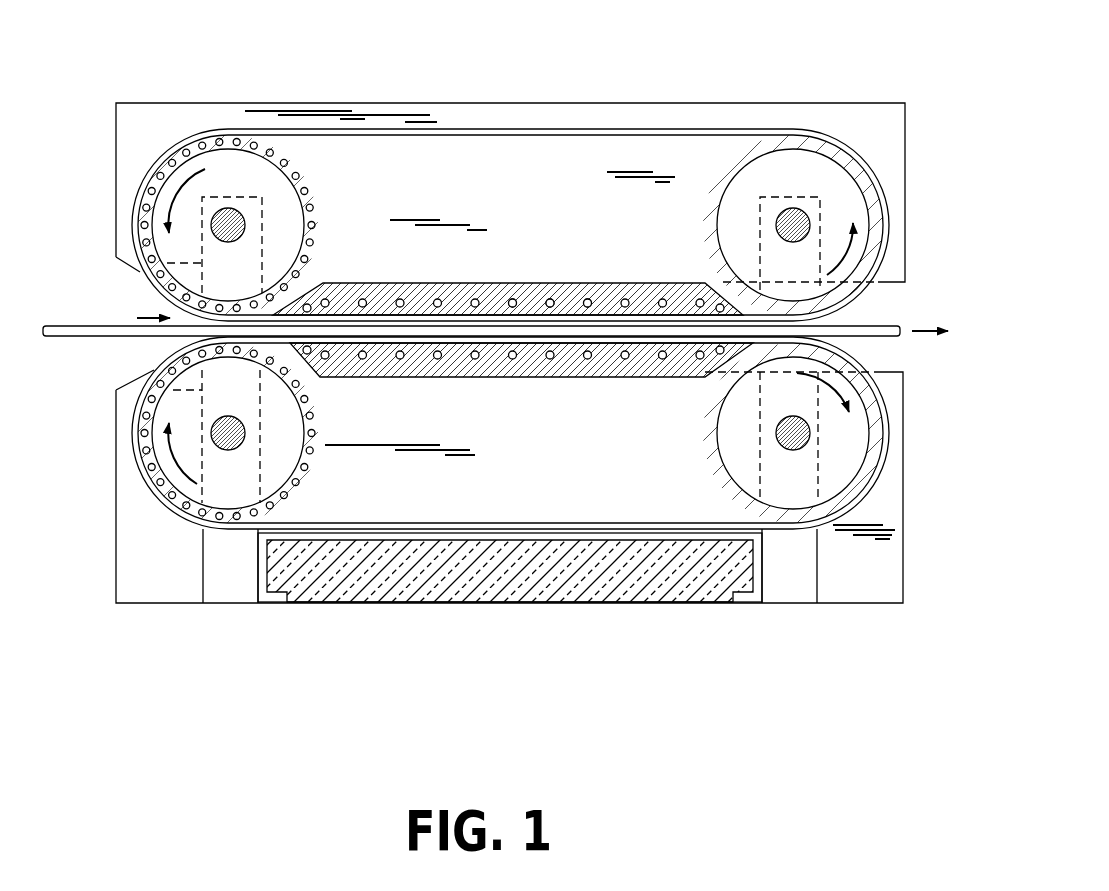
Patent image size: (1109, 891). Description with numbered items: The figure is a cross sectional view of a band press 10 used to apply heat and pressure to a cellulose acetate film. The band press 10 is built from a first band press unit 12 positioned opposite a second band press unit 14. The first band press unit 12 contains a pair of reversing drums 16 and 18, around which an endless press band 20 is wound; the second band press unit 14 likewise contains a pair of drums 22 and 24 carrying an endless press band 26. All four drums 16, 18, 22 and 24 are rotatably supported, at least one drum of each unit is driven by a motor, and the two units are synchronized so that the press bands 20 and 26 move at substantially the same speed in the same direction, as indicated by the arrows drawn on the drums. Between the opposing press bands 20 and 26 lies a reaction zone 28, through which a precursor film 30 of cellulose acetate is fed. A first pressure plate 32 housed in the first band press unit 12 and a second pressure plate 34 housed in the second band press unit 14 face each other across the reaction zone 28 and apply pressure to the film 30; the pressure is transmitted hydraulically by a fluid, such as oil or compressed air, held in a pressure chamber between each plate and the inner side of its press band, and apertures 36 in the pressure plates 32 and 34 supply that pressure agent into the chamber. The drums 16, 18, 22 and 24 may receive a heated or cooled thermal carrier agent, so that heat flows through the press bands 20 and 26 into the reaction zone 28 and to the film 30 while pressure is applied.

The band press 10 is at (781, 60).
The first band press unit 12 is at (907, 137).
The second band press unit 14 is at (903, 570).
The reversing drum 16 is at (317, 190).
The reversing drum 18 is at (700, 220).
The endless press band 20 is at (357, 133).
The drum 22 is at (313, 475).
The drum 24 is at (700, 443).
The endless press band 26 is at (780, 527).
The reaction zone 28 is at (540, 305).
The precursor film 30 is at (887, 323).
The first pressure plate 32 is at (467, 290).
The second pressure plate 34 is at (477, 338).
The apertures 36 is at (423, 283).